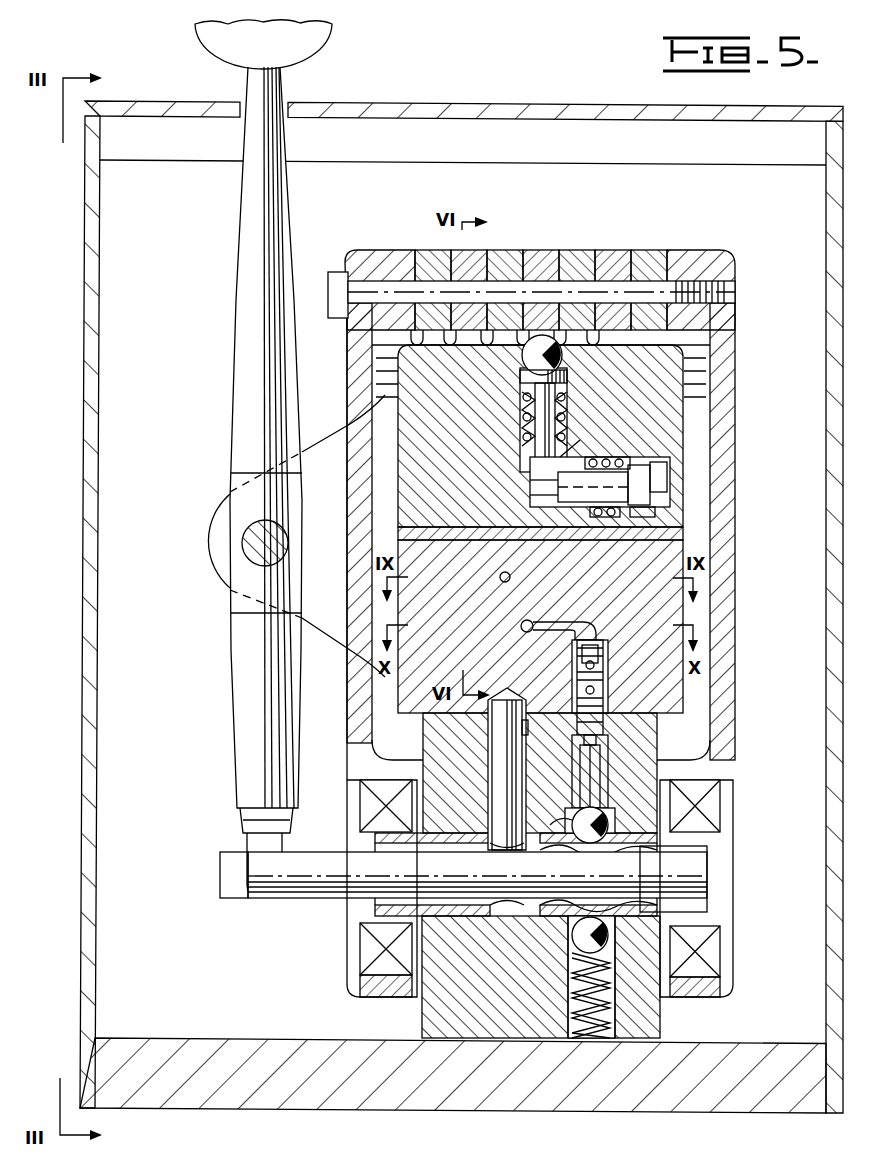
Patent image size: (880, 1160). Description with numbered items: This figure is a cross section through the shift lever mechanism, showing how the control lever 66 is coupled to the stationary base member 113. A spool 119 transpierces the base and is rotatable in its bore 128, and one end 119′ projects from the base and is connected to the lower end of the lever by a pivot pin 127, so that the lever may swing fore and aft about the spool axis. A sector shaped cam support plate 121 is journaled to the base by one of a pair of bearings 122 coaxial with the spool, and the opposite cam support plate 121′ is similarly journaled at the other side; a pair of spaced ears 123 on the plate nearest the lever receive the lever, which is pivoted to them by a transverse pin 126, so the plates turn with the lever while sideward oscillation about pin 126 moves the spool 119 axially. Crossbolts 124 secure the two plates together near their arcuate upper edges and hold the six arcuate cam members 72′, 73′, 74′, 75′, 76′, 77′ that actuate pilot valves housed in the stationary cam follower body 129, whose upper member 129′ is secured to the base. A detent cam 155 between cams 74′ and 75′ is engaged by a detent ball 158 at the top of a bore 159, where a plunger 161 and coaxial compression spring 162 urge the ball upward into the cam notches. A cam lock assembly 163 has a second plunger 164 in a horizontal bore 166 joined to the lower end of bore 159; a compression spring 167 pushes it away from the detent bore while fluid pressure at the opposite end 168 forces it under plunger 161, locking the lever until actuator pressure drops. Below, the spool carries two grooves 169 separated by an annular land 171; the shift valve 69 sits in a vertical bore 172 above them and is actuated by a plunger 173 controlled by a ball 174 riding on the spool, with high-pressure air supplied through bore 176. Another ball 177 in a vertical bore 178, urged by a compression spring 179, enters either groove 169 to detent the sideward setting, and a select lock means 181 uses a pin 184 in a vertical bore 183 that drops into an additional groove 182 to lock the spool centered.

The control lever 66 is at (245, 231).
The shift valve 69 is at (577, 688).
The arcuate cam member 72′ is at (655, 230).
The arcuate cam member 73′ is at (603, 250).
The arcuate cam member 74′ is at (575, 250).
The arcuate cam member 75′ is at (550, 234).
The arcuate cam member 76′ is at (470, 250).
The arcuate cam member 77′ is at (428, 250).
The detent cam 155 is at (545, 250).
The base member 113 is at (492, 1045).
The spool 119 is at (477, 879).
The spool end projection 119′ is at (222, 881).
The cam support plate 121 is at (362, 338).
The housing cap 121′ is at (728, 323).
The bearing 122 is at (362, 944).
The ears 123 is at (218, 510).
The bolt 124 is at (742, 291).
The transverse pin 126 is at (257, 553).
The pivot pin 127 is at (262, 890).
The bore 128 is at (470, 920).
The cam follower body 129 is at (700, 530).
The upper member of cam follower body 129′ is at (678, 500).
The detent ball 158 is at (522, 370).
The detent bore 159 is at (522, 436).
The plunger 161 is at (538, 468).
The compression spring 162 is at (522, 406).
The cam lock assembly 163 is at (596, 440).
The second plunger 164 is at (560, 488).
The horizontal bore 166 is at (660, 457).
The compression spring 167 is at (590, 540).
The opposite end of bore 168 is at (660, 540).
The grooves 169 is at (628, 888).
The annular land 171 is at (572, 828).
The vertical bore 172 is at (604, 690).
The plunger 173 is at (600, 782).
The ball 174 is at (572, 810).
The bore 176 is at (560, 627).
The ball 177 is at (574, 945).
The vertical bore 178 is at (618, 1040).
The compression spring 179 is at (595, 1040).
The select lock means 181 is at (490, 771).
The groove 182 is at (500, 874).
The vertical bore 183 is at (500, 820).
The pin 184 is at (497, 738).